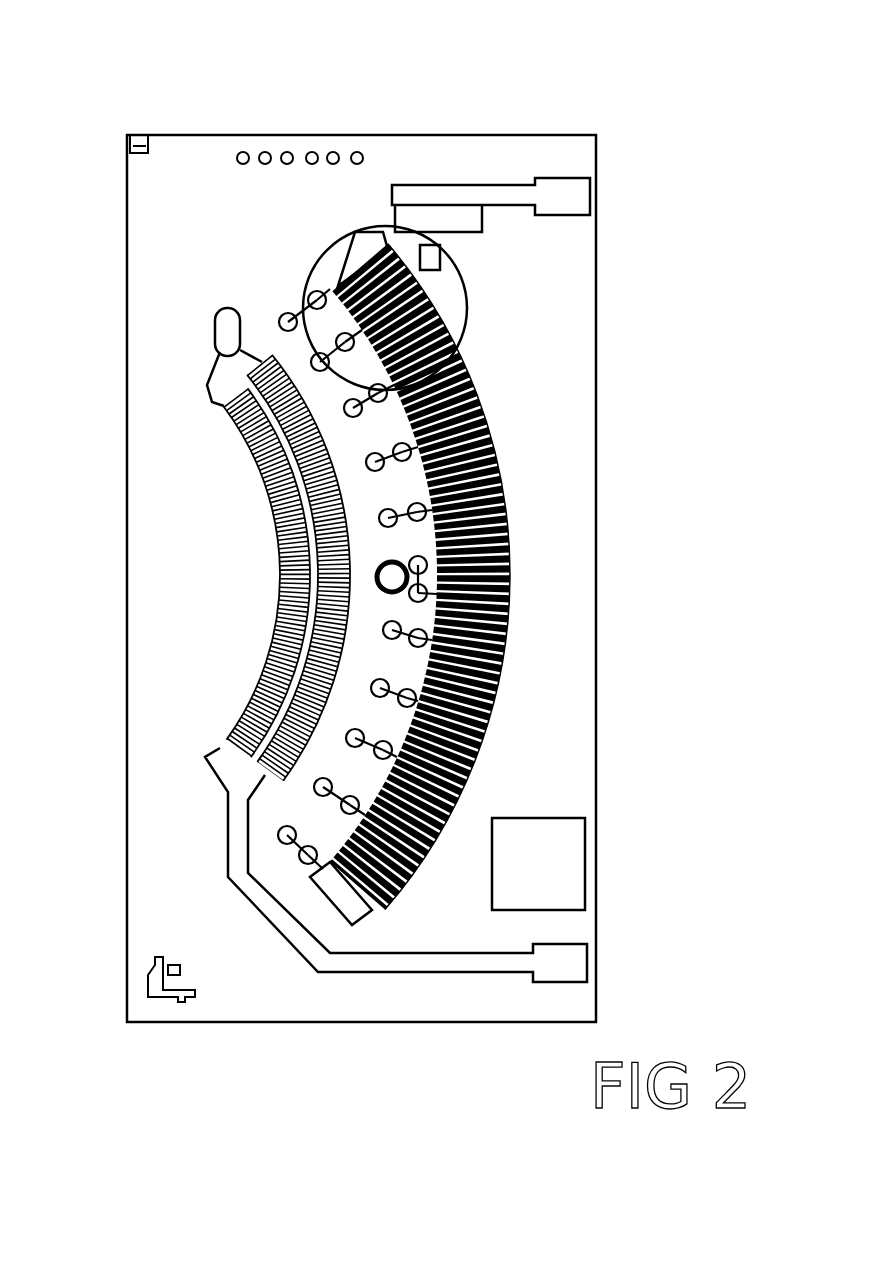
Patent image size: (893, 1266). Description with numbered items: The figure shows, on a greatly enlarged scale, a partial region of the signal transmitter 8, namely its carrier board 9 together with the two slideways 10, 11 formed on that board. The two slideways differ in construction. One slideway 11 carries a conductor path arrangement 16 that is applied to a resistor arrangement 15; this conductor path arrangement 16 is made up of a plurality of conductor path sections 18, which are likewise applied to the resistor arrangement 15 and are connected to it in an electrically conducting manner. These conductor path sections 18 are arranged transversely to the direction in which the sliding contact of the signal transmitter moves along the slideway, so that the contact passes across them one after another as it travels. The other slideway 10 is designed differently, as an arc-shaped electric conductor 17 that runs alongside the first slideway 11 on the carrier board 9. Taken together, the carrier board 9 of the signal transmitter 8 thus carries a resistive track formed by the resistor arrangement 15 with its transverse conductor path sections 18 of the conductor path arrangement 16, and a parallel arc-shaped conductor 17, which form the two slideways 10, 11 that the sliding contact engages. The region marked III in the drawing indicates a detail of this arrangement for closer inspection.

The signal transmitter 8 is at (391, 518).
The carrier board 9 is at (402, 163).
The slideway 10 is at (240, 352).
The slideway 11 is at (350, 268).
The resistor arrangement 15 is at (485, 405).
The conductor path arrangement 16 is at (510, 422).
The arc-shaped electric conductor 17 is at (233, 388).
The conductor path sections 18 is at (506, 498).
The detail section III is at (695, 170).